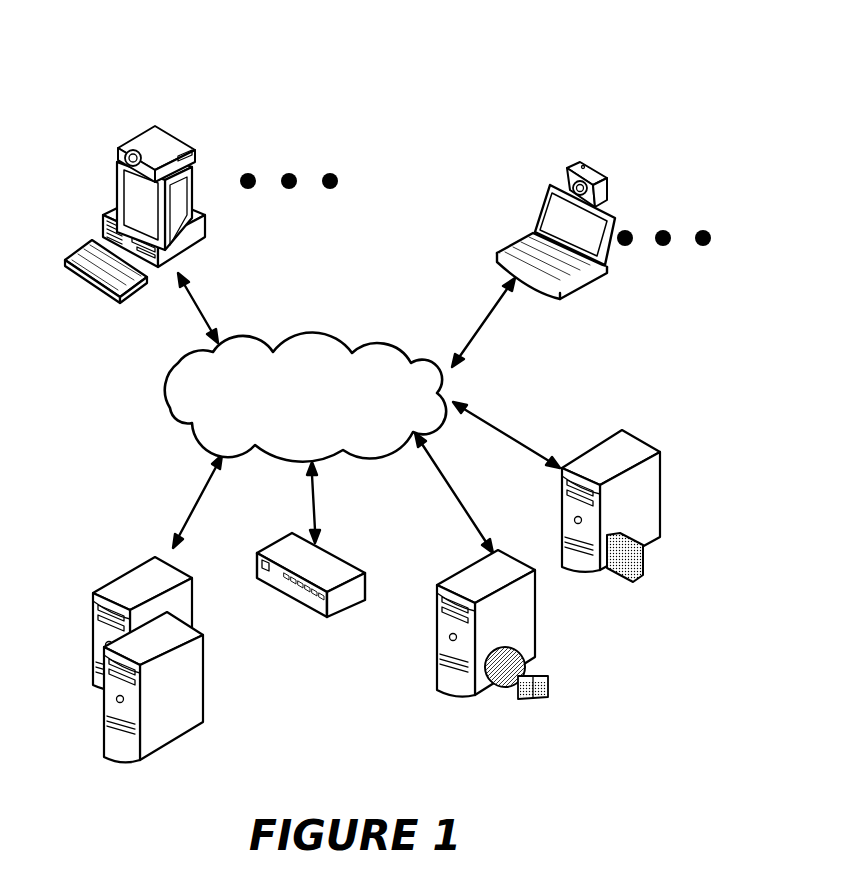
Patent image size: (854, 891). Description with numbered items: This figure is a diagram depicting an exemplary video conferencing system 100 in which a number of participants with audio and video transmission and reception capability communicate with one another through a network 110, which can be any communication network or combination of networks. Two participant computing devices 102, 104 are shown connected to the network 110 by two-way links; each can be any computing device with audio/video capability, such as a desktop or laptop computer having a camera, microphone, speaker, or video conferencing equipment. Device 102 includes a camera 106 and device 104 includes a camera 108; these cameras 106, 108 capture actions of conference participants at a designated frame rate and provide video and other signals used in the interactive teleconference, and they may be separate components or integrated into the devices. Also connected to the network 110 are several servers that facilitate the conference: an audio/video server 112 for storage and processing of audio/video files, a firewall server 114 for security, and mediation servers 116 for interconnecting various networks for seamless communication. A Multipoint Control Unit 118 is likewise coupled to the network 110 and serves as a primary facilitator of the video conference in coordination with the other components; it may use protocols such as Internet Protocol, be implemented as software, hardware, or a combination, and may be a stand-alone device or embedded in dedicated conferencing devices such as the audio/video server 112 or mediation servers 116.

The video conferencing system 100 is at (365, 79).
The participant computing device 102 is at (117, 170).
The participant computing device 104 is at (510, 240).
The camera 106 is at (162, 143).
The camera 108 is at (605, 172).
The network 110 is at (170, 400).
The audio/video server 112 is at (473, 693).
The firewall server 114 is at (660, 538).
The mediation servers 116 is at (95, 602).
The Multipoint Control Unit (MCU) 118 is at (322, 603).